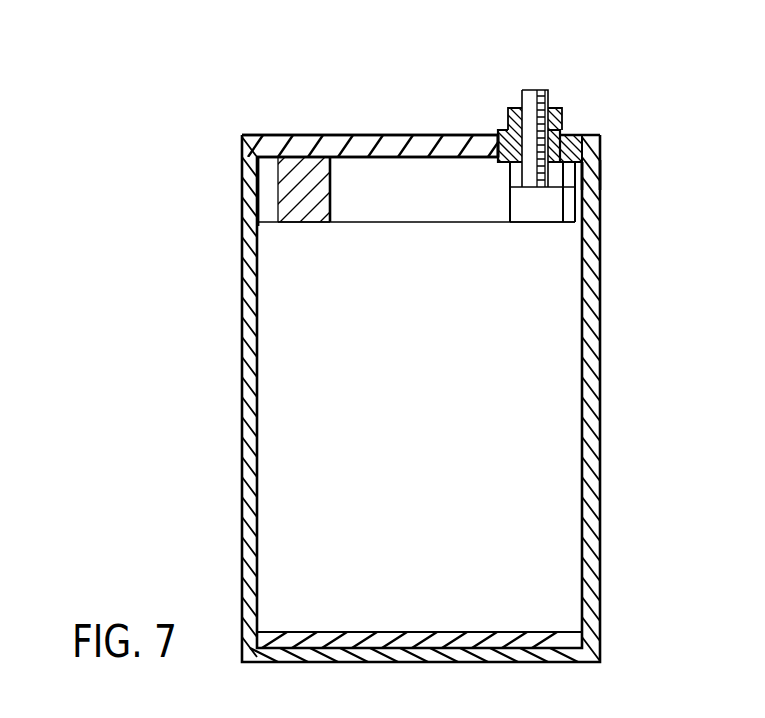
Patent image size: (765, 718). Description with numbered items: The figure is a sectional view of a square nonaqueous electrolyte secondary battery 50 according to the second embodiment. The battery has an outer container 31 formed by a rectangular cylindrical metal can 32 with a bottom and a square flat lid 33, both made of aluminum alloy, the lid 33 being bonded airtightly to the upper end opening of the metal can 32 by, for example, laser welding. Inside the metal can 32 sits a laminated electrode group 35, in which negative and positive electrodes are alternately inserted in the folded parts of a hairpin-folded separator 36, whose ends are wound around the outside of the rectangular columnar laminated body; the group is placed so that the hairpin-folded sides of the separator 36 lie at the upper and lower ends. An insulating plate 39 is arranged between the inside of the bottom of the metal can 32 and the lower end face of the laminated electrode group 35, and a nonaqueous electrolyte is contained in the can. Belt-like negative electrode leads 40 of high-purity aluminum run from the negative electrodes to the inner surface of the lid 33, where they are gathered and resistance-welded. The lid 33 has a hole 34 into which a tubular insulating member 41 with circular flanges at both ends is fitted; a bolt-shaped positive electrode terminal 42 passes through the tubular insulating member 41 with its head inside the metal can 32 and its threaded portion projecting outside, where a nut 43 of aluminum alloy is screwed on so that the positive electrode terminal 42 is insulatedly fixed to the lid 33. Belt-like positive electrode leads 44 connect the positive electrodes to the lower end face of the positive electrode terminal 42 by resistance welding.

The square nonaqueous electrolyte secondary battery 50 is at (679, 71).
The outer container 31 is at (665, 130).
The metal can 32 is at (600, 172).
The lid 33 is at (600, 146).
The hole 34 is at (570, 143).
The laminated electrode group 35 is at (270, 214).
The separator 36 is at (586, 333).
The insulating plate 39 is at (578, 640).
The negative electrode lead 40 is at (316, 192).
The tubular insulating member 41 is at (512, 146).
The positive electrode terminal 42 is at (533, 100).
The nut 43 is at (517, 110).
The positive electrode lead 44 is at (528, 207).